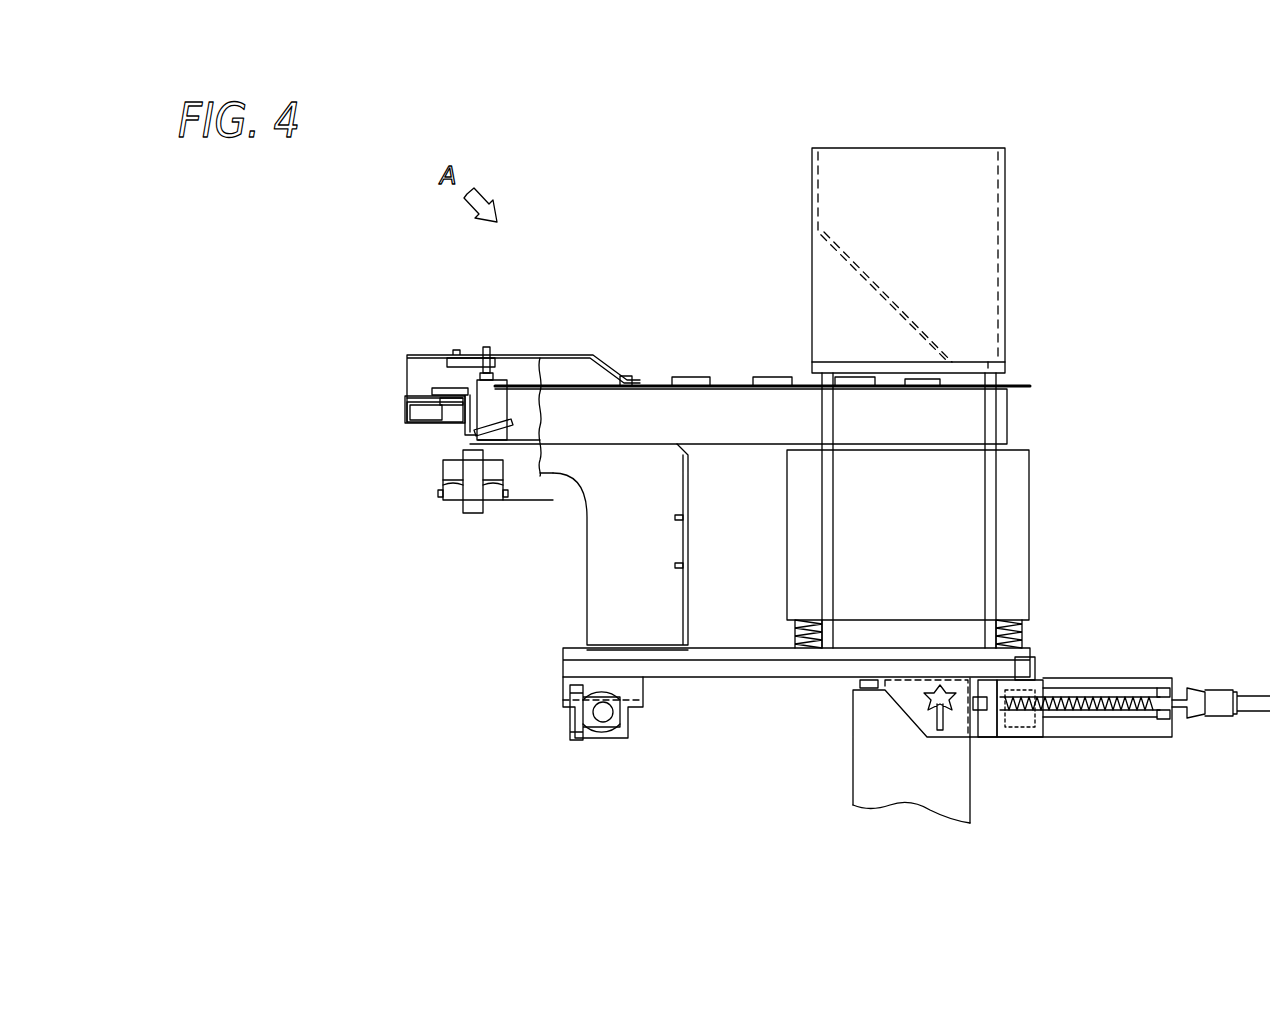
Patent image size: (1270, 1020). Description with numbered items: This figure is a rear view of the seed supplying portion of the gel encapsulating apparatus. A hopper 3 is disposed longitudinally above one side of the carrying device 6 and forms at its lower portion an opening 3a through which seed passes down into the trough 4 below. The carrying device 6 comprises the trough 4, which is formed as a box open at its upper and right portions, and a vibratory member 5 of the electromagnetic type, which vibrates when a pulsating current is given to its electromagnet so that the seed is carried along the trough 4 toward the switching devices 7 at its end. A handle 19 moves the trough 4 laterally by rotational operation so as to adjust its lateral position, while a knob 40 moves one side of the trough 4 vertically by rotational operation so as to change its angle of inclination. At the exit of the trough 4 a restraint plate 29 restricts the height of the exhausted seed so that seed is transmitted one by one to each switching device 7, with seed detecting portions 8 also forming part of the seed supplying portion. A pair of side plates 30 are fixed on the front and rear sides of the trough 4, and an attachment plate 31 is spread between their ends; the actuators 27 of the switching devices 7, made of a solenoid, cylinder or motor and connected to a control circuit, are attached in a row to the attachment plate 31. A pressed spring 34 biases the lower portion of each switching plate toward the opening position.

The hopper 3 is at (1005, 202).
The opening 3a is at (988, 362).
The trough 4 is at (720, 400).
The vibratory member 5 is at (1020, 560).
The carrying device 6 is at (655, 292).
The switching device 7 is at (433, 443).
The seed detecting portion 8 is at (458, 527).
The handle 19 is at (1253, 700).
The actuator 27 is at (428, 418).
The restraint plate 29 is at (503, 430).
The side plate 30 is at (583, 353).
The attachment plate 31 is at (417, 400).
The pressed spring 34 is at (435, 390).
The knob 40 is at (915, 698).